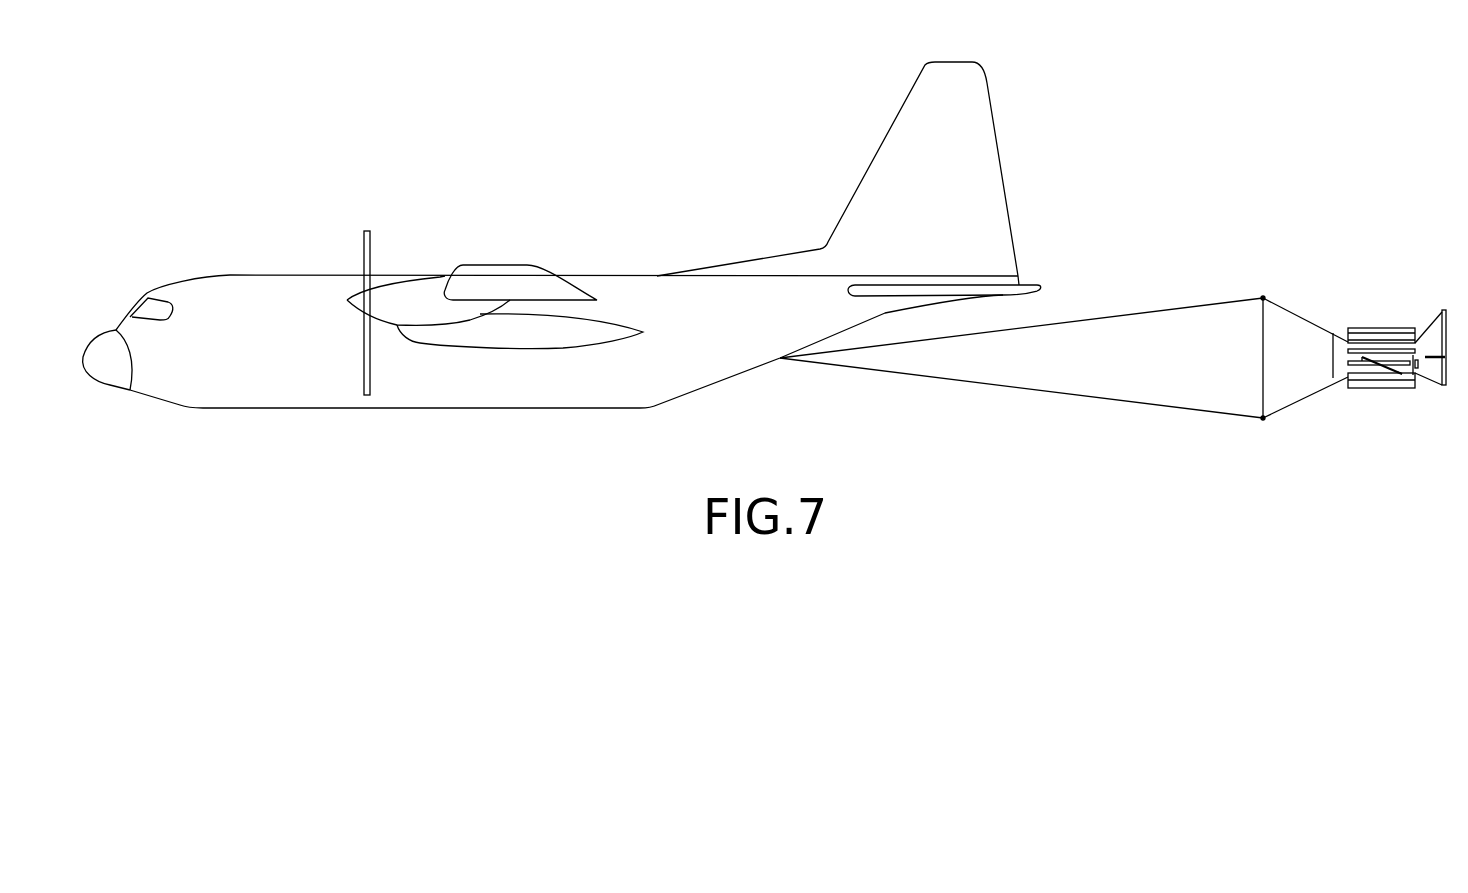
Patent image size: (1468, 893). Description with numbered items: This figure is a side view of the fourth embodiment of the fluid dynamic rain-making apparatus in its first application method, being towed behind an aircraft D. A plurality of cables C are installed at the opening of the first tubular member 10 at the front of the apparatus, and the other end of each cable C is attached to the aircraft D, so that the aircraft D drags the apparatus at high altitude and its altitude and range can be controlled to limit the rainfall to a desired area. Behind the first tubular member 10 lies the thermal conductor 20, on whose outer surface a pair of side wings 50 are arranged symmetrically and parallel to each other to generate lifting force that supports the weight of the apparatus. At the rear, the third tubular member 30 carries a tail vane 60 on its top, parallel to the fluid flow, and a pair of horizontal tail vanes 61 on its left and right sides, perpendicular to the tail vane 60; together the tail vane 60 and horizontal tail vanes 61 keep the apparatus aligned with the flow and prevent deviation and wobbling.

The first tubular member 10 is at (1297, 322).
The thermal conductor 20 is at (1382, 328).
The third tubular member 30 is at (1432, 377).
The side wings 50 is at (1388, 372).
The tail vane 60 is at (1437, 322).
The horizontal tail vanes 61 is at (1433, 352).
The cables C is at (1022, 388).
The aircraft D is at (292, 392).